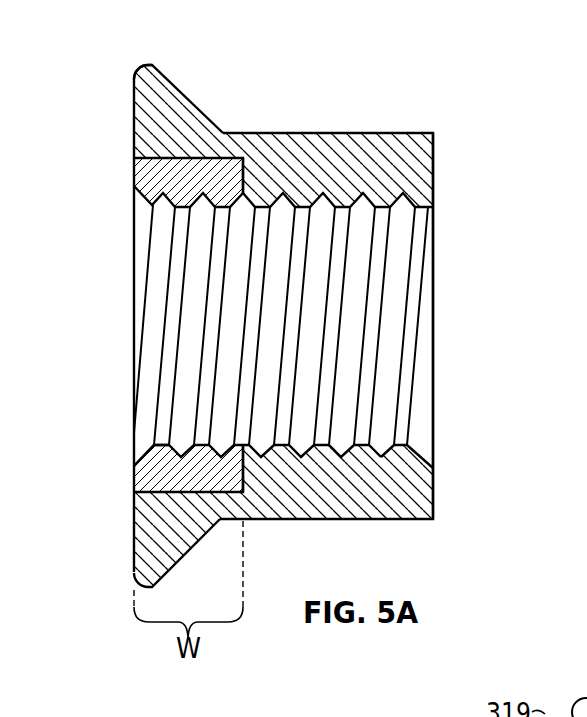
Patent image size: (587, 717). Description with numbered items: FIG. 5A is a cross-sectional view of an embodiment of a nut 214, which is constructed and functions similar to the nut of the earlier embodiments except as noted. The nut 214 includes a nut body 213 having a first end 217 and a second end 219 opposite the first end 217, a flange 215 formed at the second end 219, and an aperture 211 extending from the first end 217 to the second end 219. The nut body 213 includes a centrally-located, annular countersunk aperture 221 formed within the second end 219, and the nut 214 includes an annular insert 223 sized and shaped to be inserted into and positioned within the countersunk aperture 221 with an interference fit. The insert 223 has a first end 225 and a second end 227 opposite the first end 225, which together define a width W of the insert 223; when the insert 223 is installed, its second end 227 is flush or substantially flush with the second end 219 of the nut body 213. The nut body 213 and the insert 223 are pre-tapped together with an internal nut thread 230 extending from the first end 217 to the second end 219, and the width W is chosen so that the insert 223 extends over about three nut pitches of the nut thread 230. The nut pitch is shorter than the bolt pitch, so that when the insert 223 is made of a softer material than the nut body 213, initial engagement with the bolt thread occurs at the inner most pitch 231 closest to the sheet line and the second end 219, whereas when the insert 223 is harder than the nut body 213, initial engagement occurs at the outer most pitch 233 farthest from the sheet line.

The nut 214 is at (284, 299).
The flange 215 is at (152, 76).
The second end 219 is at (133, 105).
The annular insert 223 is at (153, 177).
The aperture 211 is at (198, 264).
The inner most pitch 231 is at (160, 442).
The second end of insert 227 is at (133, 483).
The countersunk aperture 221 is at (250, 180).
The nut body 213 is at (354, 147).
The first end 217 is at (433, 158).
The internal nut thread 230 is at (360, 275).
The outer most pitch 233 is at (404, 443).
The first end of insert 225 is at (247, 475).